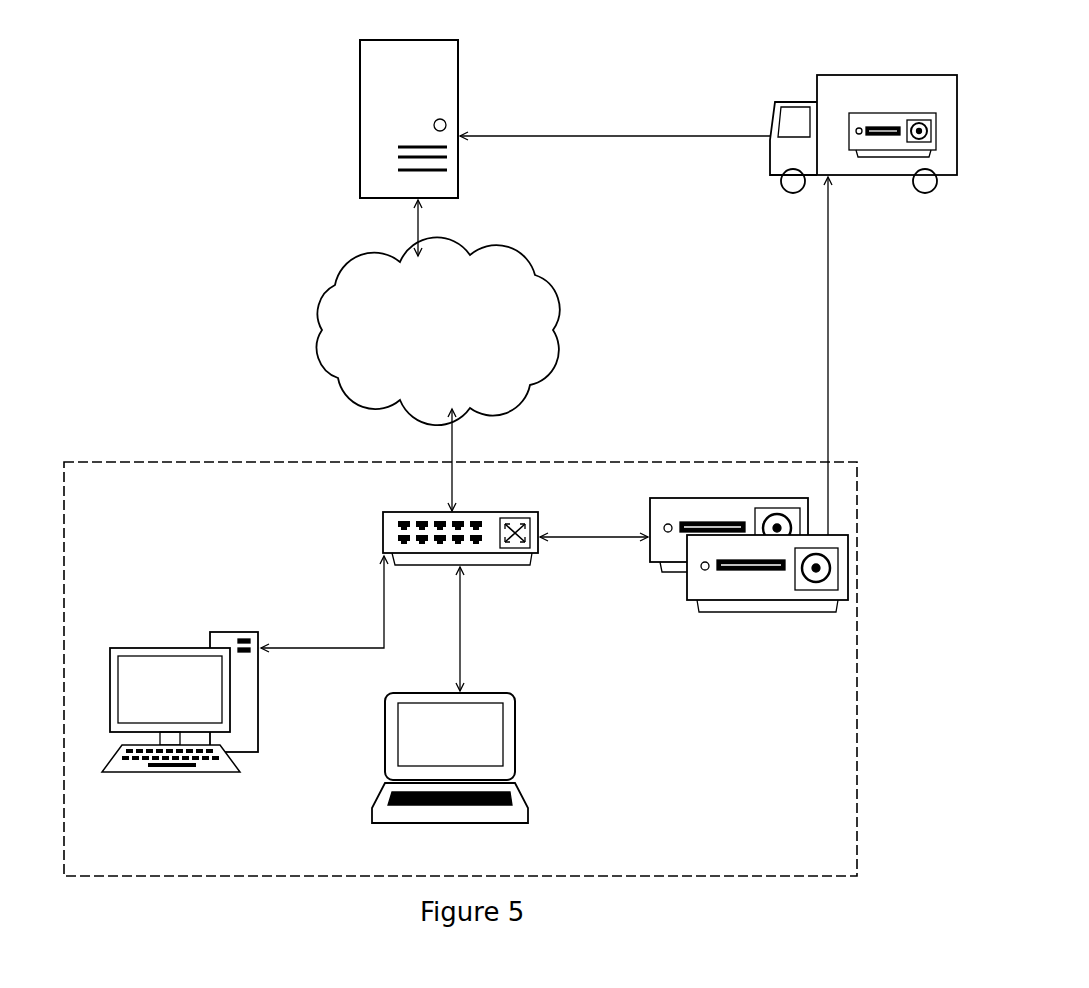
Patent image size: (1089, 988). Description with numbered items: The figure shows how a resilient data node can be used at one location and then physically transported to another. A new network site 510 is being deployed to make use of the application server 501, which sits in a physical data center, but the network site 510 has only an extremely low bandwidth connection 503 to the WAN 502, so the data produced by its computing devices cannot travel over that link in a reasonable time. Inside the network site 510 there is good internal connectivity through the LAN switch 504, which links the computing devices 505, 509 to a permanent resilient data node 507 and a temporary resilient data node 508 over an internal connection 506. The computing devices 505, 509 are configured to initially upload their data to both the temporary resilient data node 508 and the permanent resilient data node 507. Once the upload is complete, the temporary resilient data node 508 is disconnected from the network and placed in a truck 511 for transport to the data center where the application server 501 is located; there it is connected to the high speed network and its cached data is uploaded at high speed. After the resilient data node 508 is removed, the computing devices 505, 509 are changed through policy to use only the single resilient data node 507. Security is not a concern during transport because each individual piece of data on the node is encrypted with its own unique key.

The application server 501 is at (357, 112).
The WAN 502 is at (549, 283).
The low bandwidth connection 503 is at (452, 435).
The LAN switch 504 is at (381, 512).
The computing device 505 is at (222, 630).
The connection to devices 506 is at (597, 537).
The permanent resilient data node 507 is at (677, 498).
The temporary resilient data node 508 is at (760, 612).
The computing device 509 is at (515, 720).
The network site 510 is at (859, 757).
The truck 511 is at (957, 110).